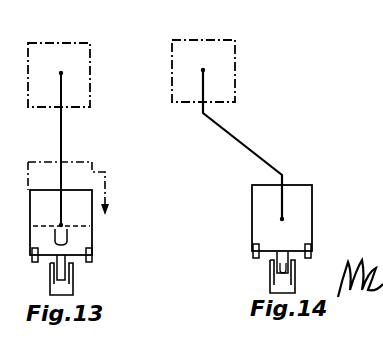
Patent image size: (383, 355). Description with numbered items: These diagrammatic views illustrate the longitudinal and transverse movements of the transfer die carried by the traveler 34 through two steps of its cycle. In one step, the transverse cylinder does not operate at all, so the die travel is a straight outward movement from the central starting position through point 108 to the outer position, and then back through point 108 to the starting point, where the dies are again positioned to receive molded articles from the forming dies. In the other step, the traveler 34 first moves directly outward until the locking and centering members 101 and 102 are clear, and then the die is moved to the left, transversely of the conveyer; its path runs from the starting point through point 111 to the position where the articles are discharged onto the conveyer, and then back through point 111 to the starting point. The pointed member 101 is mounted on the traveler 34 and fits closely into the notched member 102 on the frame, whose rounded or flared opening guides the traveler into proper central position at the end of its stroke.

In FIG. 13, the traveler 34 is at (91, 72).
In FIG. 14, the traveler 34 is at (237, 63).
In FIG. 13, the intermediate die travel point 108 is at (61, 136).
In FIG. 13, the pointed member 101 is at (66, 258).
In FIG. 14, the pointed member 101 is at (280, 254).
In FIG. 13, the notched member 102 is at (62, 285).
In FIG. 14, the notched member 102 is at (280, 283).
In FIG. 14, the intermediate die travel point 111 is at (250, 148).